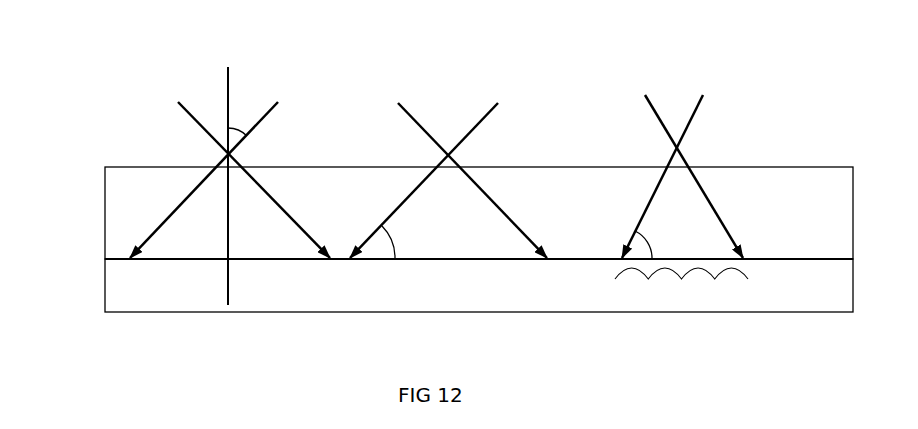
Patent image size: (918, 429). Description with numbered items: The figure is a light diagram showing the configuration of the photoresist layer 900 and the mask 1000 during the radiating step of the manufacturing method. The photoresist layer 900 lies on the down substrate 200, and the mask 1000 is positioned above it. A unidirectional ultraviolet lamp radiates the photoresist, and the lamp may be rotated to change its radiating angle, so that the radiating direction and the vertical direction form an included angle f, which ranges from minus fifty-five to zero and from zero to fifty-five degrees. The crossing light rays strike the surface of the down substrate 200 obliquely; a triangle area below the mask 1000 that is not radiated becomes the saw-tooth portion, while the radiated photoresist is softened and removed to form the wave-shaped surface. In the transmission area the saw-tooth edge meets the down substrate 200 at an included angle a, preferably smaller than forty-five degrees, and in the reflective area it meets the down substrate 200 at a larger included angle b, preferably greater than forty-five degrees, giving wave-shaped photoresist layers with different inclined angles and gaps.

The mask 1000 is at (226, 150).
The photoresist layer 900 is at (127, 236).
The down substrate 200 is at (297, 302).
The included angle f is at (237, 120).
The included angle a is at (396, 242).
The included angle b is at (651, 241).